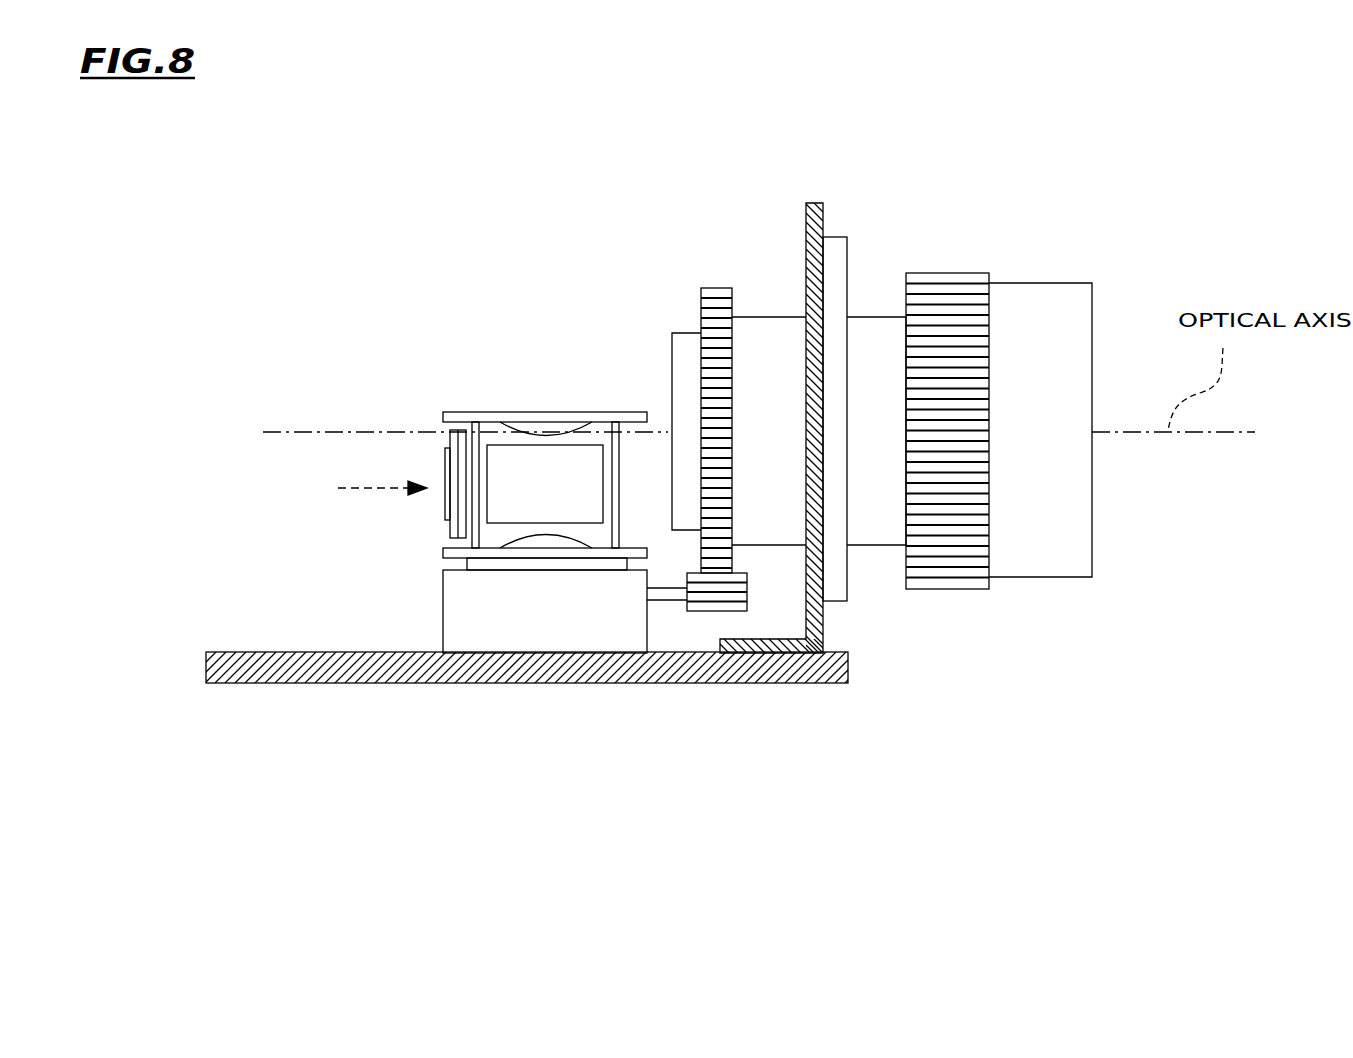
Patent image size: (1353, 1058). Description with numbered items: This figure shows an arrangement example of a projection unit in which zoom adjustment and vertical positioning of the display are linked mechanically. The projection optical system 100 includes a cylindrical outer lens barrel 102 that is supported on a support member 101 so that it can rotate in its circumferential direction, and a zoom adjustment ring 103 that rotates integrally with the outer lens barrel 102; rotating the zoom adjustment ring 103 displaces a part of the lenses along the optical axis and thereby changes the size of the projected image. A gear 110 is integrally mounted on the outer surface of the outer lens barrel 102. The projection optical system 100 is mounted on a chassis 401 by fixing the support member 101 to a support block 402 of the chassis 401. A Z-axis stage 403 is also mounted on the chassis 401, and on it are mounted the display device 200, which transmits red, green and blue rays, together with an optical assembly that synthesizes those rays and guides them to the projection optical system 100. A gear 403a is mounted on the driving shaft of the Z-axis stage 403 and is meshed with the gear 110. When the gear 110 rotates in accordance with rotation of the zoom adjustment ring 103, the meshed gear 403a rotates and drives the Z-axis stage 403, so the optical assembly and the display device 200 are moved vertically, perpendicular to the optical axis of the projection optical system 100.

The projection optical system 100 is at (1064, 588).
The support member 101 is at (835, 236).
The outer lens barrel 102 is at (866, 548).
The zoom adjustment ring 103 is at (948, 272).
The gear 110 is at (717, 286).
The display device 200 is at (543, 478).
The chassis 401 is at (322, 677).
The support block 402 is at (762, 650).
The Z-axis stage 403 is at (528, 625).
The gear 403a is at (708, 614).